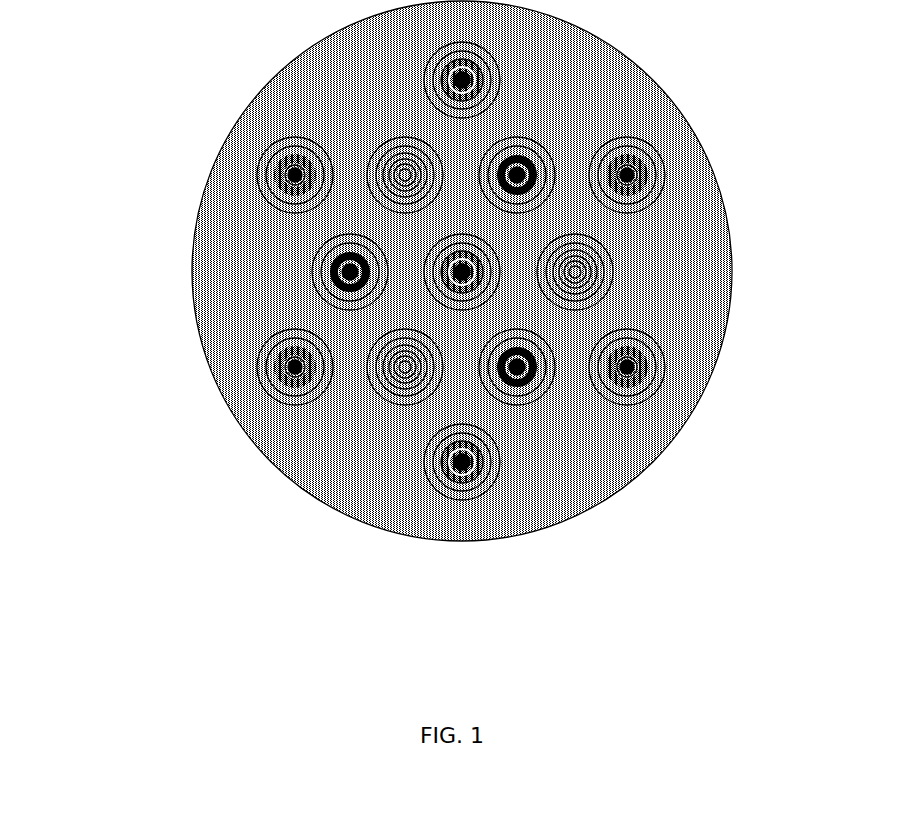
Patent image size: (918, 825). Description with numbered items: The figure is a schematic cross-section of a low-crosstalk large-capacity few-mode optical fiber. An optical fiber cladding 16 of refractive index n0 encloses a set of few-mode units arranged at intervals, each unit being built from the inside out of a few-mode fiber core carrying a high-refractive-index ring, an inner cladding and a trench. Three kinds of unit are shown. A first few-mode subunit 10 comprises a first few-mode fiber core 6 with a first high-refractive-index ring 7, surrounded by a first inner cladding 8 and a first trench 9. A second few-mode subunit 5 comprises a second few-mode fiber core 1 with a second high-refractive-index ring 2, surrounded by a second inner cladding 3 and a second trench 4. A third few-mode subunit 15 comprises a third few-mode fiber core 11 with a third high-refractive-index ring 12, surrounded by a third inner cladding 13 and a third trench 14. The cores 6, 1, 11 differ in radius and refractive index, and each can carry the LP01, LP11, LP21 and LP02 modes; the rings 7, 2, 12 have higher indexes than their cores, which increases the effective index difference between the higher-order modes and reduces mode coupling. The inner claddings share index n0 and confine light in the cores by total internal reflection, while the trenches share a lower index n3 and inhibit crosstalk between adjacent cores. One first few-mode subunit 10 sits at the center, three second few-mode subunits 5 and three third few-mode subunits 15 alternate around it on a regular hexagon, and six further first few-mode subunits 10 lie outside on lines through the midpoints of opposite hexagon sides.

The second few-mode fiber core 1 is at (573, 272).
The second high-refractive-index ring 2 is at (570, 262).
The second inner cladding 3 is at (573, 250).
The second trench 4 is at (578, 307).
The second few-mode subunit 5 is at (824, 203).
The first few-mode fiber core 6 is at (458, 463).
The first high-refractive-index ring 7 is at (473, 473).
The first inner cladding 8 is at (483, 477).
The first trench 9 is at (430, 470).
The first few-mode subunit 10 is at (395, 641).
The third few-mode fiber core 11 is at (337, 273).
The third high-refractive-index ring 12 is at (336, 265).
The third inner cladding 13 is at (342, 258).
The third trench 14 is at (352, 307).
The third few-mode subunit 15 is at (84, 203).
The optical fiber cladding 16 is at (608, 468).